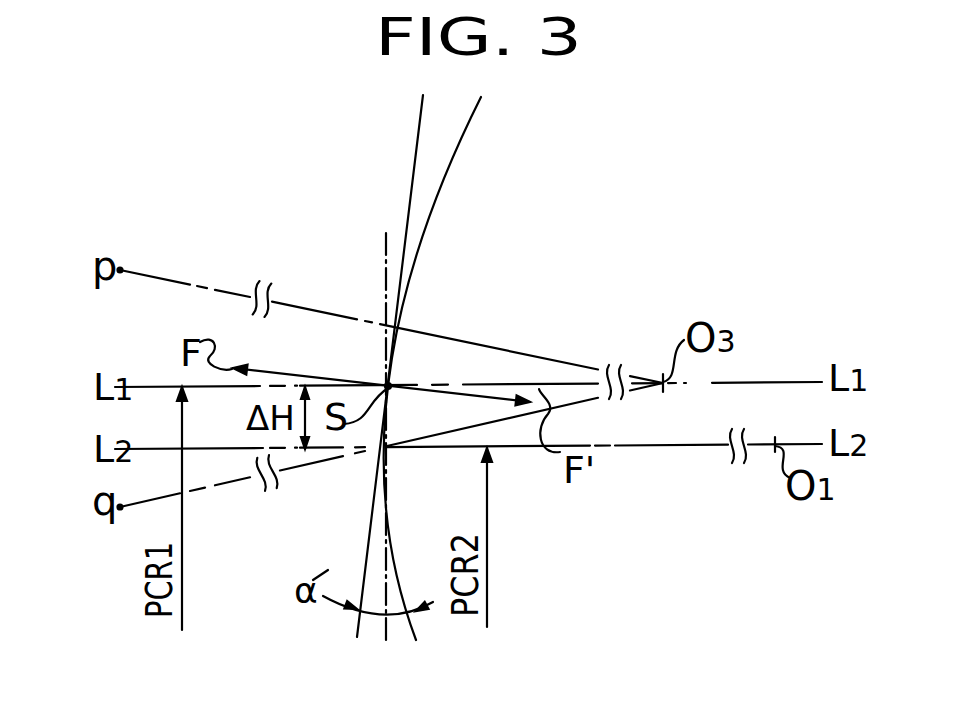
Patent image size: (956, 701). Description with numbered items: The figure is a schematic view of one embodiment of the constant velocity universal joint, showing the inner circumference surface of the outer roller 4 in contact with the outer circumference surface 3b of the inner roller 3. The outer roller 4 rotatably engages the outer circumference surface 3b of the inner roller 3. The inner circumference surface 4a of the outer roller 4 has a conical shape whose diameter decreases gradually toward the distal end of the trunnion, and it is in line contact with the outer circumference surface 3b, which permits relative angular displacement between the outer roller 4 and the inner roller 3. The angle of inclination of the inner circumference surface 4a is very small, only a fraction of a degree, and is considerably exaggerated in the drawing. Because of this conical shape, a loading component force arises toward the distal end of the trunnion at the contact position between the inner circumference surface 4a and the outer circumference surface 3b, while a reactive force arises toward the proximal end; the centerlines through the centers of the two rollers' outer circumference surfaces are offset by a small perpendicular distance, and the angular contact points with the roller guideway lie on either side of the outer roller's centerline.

The inner roller 3 is at (565, 203).
The outer circumference surface of the inner roller 3b is at (430, 197).
The outer roller 4 is at (286, 203).
The inner circumference surface of the outer roller 4a is at (418, 137).